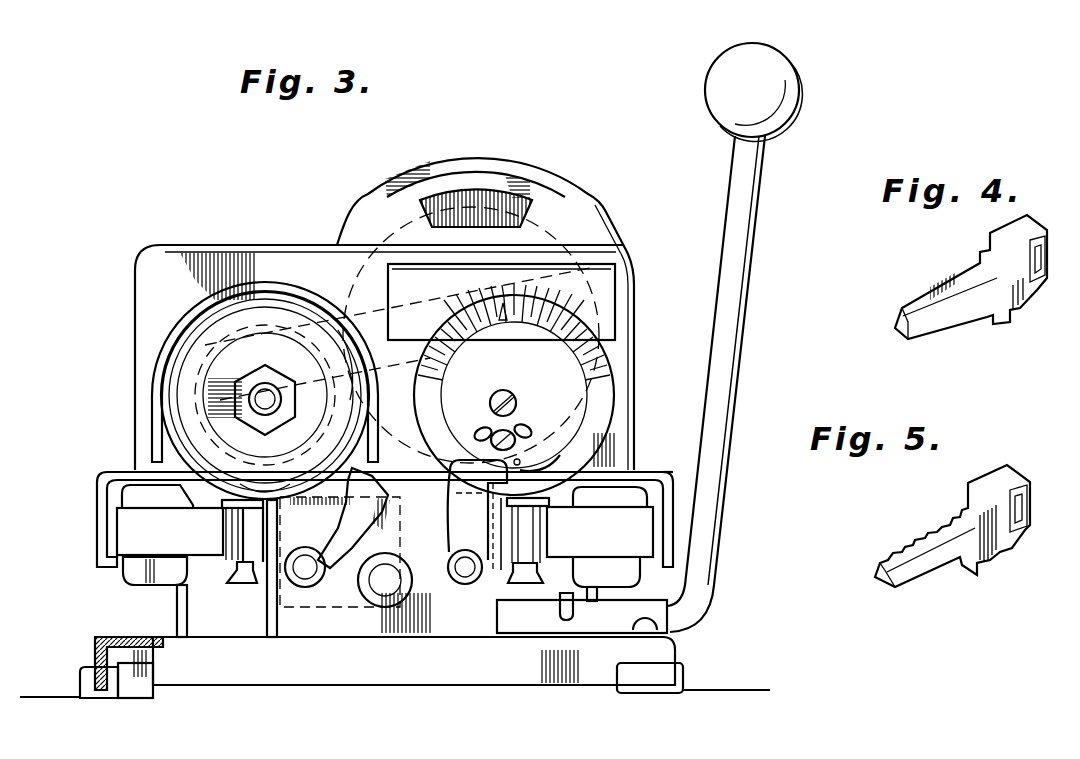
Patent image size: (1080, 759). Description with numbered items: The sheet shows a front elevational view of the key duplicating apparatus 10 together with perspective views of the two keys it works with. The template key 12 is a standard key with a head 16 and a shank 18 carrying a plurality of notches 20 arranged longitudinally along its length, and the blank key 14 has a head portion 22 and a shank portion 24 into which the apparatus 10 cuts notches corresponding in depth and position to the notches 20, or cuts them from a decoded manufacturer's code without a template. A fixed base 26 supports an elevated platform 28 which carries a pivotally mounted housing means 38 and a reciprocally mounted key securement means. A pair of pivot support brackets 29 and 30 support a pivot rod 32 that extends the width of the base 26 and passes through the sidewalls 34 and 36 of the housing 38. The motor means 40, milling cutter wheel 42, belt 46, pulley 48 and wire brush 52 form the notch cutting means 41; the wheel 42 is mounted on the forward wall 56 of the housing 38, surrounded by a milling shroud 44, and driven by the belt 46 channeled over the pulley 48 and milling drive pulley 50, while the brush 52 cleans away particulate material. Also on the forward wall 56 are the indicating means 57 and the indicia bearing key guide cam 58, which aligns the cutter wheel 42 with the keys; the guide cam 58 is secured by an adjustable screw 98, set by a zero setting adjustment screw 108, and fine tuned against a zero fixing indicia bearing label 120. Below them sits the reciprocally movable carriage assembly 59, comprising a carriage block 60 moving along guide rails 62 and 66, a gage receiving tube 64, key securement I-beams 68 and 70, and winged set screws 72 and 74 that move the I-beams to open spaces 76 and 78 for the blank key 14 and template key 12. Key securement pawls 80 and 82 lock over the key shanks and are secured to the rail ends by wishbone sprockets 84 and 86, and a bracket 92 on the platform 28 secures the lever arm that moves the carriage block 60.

In FIG. 3, the key duplicating apparatus 10 is at (166, 232).
In FIG. 5, the template key 12 is at (970, 582).
In FIG. 4, the blank key 14 is at (953, 330).
In FIG. 5, the head 16 is at (1000, 470).
In FIG. 5, the shank 18 is at (915, 573).
In FIG. 5, the notches 20 is at (925, 535).
In FIG. 4, the head portion 22 is at (1018, 240).
In FIG. 4, the shank portion 24 is at (932, 295).
In FIG. 3, the fixed base 26 is at (650, 651).
In FIG. 3, the elevated platform 28 is at (100, 632).
In FIG. 3, the pivot support bracket 29 is at (630, 612).
In FIG. 3, the pivot support bracket 30 is at (180, 603).
In FIG. 3, the pivot rod 32 is at (110, 537).
In FIG. 3, the sidewall 34 is at (678, 497).
In FIG. 3, the sidewall 36 is at (97, 493).
In FIG. 3, the pivotally mounted housing means 38 is at (650, 468).
In FIG. 3, the motor means 40 is at (484, 163).
In FIG. 3, the notch cutting means 41 is at (148, 375).
In FIG. 3, the milling cutter wheel 42 is at (262, 330).
In FIG. 3, the milling shroud 44 is at (207, 312).
In FIG. 3, the belt 46 is at (342, 322).
In FIG. 3, the pulley 48 is at (522, 200).
In FIG. 3, the milling drive pulley 50 is at (168, 336).
In FIG. 3, the wire brush 52 is at (440, 202).
In FIG. 3, the forward wall 56 is at (155, 275).
In FIG. 3, the indicating means 57 is at (612, 402).
In FIG. 3, the indicia bearing key guide cam 58 is at (604, 367).
In FIG. 3, the reciprocally movable carriage assembly 59 is at (243, 590).
In FIG. 3, the carriage block 60 is at (267, 588).
In FIG. 3, the guide rail 62 is at (306, 570).
In FIG. 3, the gage receiving tube 64 is at (388, 607).
In FIG. 3, the guide rail 66 is at (467, 569).
In FIG. 3, the key securement I-beam 68 is at (523, 577).
In FIG. 3, the key securement I-beam 70 is at (232, 535).
In FIG. 3, the winged set screw 72 is at (137, 572).
In FIG. 3, the winged set screw 74 is at (633, 570).
In FIG. 3, the space 76 is at (268, 498).
In FIG. 3, the space 78 is at (535, 466).
In FIG. 3, the key securement pawl 80 is at (333, 535).
In FIG. 3, the key securement pawl 82 is at (478, 503).
In FIG. 3, the wishbone sprocket 84 is at (328, 572).
In FIG. 3, the wishbone sprocket 86 is at (457, 563).
In FIG. 3, the bracket 92 is at (583, 612).
In FIG. 3, the adjustable screw 98 is at (506, 396).
In FIG. 3, the zero setting adjustment screw 108 is at (496, 432).
In FIG. 3, the zero fixing indicia bearing label 120 is at (582, 277).